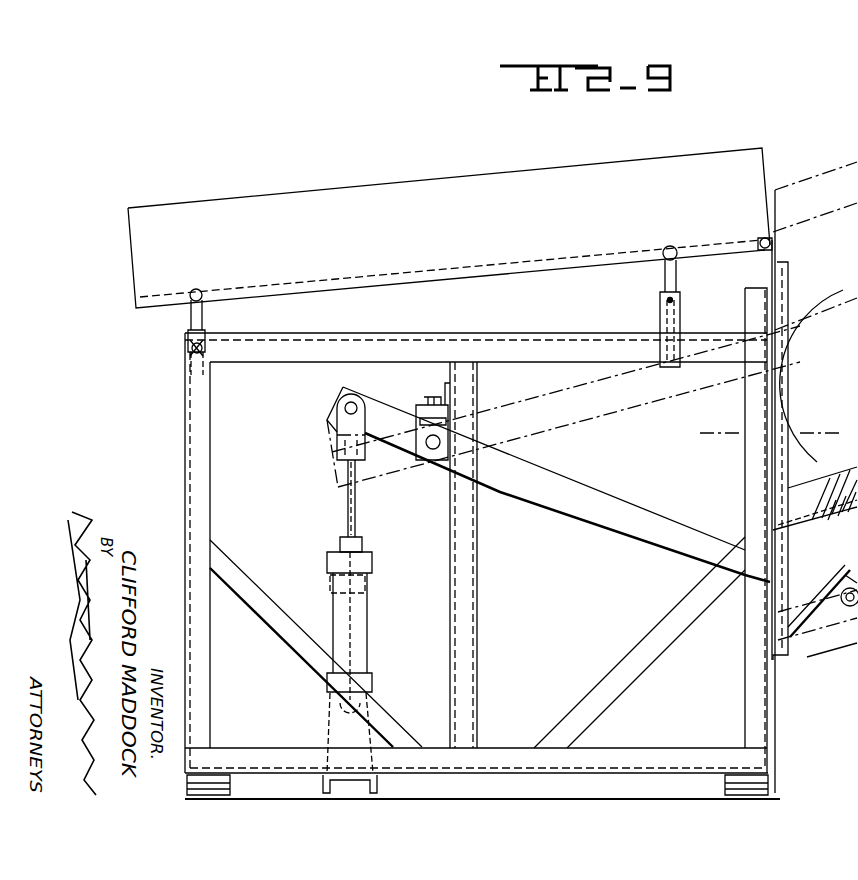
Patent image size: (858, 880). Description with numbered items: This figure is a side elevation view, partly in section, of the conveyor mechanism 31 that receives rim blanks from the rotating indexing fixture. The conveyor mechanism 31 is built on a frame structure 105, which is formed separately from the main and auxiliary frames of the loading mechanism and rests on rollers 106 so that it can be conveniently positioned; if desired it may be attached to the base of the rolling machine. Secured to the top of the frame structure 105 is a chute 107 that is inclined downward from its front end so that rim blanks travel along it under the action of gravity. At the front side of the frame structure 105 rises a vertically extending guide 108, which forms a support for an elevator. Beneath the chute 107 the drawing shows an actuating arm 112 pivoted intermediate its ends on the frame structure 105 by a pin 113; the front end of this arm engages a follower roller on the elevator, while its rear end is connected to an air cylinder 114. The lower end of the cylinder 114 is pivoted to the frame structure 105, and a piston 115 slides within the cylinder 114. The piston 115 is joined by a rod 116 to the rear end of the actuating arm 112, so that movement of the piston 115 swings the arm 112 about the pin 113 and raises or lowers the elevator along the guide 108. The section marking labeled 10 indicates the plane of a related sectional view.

The chute 107 is at (482, 176).
The conveyor mechanism 31 is at (786, 186).
The section line 10 is at (827, 424).
The pin 113 is at (432, 451).
The rod 116 is at (356, 530).
The piston 115 is at (338, 585).
The air cylinder 114 is at (372, 622).
The actuating arm 112 is at (648, 550).
The frame structure 105 is at (676, 744).
The rollers 106 is at (222, 783).
The guide 108 is at (785, 658).